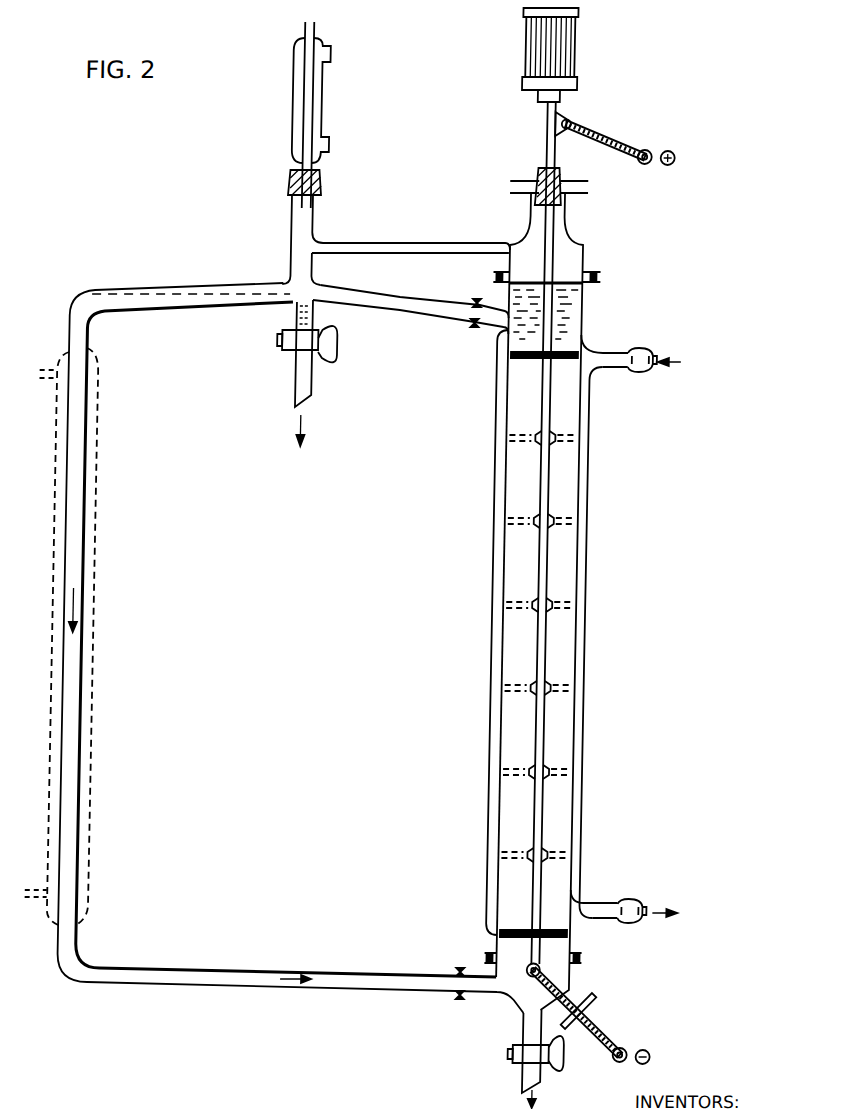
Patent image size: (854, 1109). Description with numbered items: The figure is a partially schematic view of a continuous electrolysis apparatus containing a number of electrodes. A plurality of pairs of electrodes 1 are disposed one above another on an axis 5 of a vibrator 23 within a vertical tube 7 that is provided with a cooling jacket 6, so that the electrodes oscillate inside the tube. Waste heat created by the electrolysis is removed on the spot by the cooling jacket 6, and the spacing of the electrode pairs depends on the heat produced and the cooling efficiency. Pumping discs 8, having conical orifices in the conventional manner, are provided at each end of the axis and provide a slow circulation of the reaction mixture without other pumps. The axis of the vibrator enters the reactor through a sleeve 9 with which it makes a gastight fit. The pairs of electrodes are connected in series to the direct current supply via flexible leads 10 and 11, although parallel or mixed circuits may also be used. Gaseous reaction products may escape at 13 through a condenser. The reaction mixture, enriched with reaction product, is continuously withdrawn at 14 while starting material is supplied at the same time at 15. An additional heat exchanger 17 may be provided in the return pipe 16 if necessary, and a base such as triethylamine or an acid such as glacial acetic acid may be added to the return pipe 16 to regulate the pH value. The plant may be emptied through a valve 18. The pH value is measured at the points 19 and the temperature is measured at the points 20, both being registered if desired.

The pairs of electrodes 1 is at (567, 520).
The axis 5 is at (544, 467).
The cooling jacket 6 is at (588, 730).
The vertical tube 7 is at (582, 802).
The pumping discs 8 is at (528, 358).
The sleeve 9 is at (560, 203).
The flexible lead 10 is at (610, 138).
The flexible lead 11 is at (611, 1018).
The condenser outlet 13 is at (291, 203).
The withdrawal point 14 is at (295, 397).
The starting material supply 15 is at (84, 340).
The return pipe 16 is at (85, 440).
The heat exchanger 17 is at (101, 627).
The valve 18 is at (542, 1070).
The pH measuring points 19 is at (413, 308).
The temperature measuring points 20 is at (373, 302).
The vibrator 23 is at (522, 44).